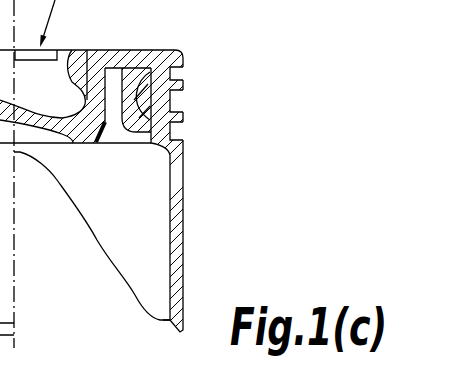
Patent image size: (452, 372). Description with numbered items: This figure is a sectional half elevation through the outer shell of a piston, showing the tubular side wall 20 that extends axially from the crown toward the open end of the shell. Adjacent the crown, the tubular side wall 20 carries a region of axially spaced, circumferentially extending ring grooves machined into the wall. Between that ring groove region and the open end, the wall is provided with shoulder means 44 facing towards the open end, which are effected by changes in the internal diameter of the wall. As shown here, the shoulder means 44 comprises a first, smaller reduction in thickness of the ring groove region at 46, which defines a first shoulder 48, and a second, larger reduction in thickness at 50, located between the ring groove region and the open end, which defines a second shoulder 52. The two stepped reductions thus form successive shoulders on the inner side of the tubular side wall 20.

The tubular side wall 20 is at (176, 284).
The shoulder means 44 is at (134, 150).
The first reduction in thickness 46 is at (123, 68).
The first shoulder 48 is at (170, 68).
The second reduction in thickness 50 is at (162, 168).
The second shoulder 52 is at (160, 156).